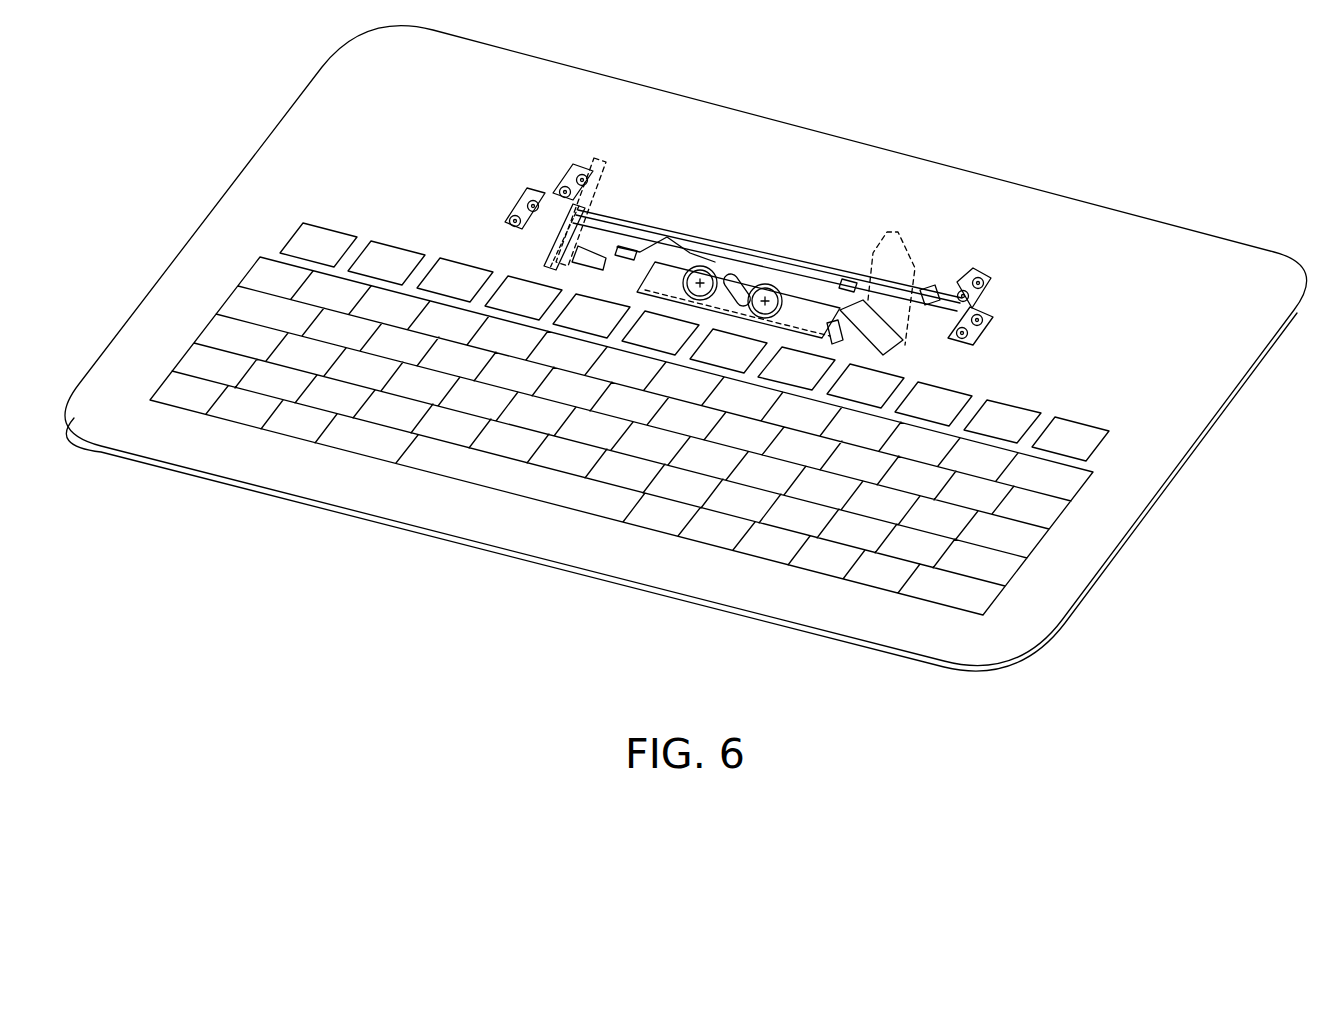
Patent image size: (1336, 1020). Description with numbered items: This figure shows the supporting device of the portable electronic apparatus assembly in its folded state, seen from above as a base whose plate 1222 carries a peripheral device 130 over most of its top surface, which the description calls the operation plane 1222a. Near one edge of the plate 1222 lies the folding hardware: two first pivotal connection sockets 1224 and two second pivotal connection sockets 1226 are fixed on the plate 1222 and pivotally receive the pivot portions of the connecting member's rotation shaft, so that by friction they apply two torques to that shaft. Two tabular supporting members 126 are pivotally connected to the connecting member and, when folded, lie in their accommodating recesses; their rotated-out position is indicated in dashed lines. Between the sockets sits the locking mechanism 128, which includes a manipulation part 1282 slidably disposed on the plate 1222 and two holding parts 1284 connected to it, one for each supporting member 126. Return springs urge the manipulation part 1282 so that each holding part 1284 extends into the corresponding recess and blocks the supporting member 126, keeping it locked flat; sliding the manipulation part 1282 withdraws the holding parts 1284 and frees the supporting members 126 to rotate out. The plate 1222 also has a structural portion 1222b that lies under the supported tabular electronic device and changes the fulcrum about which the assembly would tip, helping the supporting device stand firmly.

The supporting member 126 is at (622, 232).
The locking mechanism 128 is at (753, 177).
The manipulation part 1282 is at (742, 282).
The holding part 1284 is at (918, 63).
The first pivotal connection socket 1224 is at (577, 172).
The second pivotal connection socket 1226 is at (510, 225).
The plate 1222 is at (1045, 587).
The operation plane 1222a is at (1213, 332).
The structural portion 1222b is at (1280, 275).
The peripheral device 130 is at (666, 487).